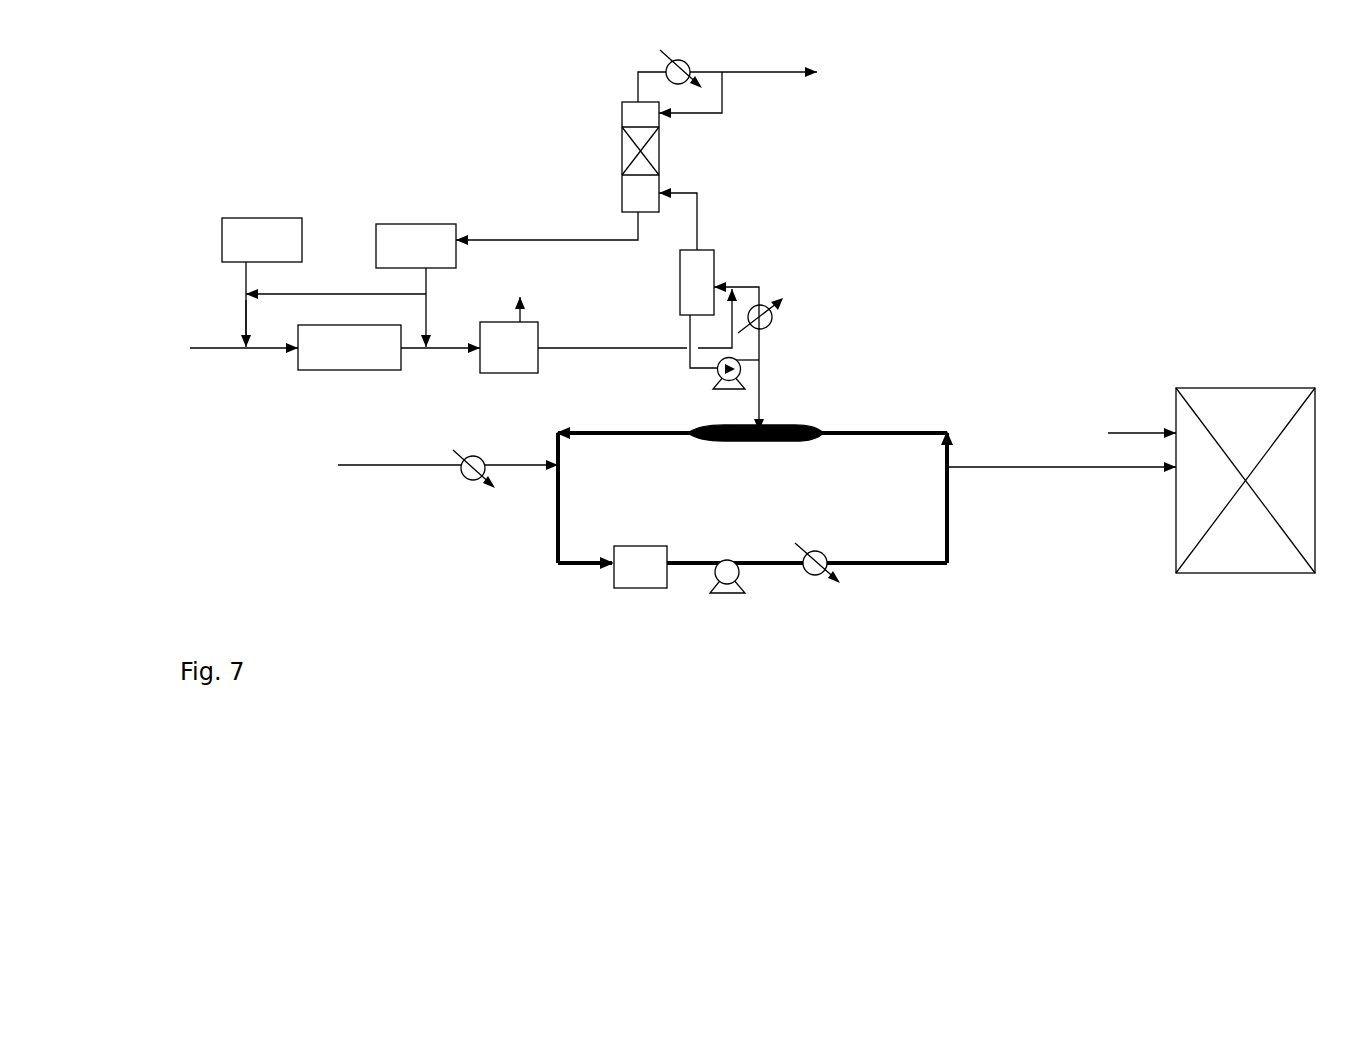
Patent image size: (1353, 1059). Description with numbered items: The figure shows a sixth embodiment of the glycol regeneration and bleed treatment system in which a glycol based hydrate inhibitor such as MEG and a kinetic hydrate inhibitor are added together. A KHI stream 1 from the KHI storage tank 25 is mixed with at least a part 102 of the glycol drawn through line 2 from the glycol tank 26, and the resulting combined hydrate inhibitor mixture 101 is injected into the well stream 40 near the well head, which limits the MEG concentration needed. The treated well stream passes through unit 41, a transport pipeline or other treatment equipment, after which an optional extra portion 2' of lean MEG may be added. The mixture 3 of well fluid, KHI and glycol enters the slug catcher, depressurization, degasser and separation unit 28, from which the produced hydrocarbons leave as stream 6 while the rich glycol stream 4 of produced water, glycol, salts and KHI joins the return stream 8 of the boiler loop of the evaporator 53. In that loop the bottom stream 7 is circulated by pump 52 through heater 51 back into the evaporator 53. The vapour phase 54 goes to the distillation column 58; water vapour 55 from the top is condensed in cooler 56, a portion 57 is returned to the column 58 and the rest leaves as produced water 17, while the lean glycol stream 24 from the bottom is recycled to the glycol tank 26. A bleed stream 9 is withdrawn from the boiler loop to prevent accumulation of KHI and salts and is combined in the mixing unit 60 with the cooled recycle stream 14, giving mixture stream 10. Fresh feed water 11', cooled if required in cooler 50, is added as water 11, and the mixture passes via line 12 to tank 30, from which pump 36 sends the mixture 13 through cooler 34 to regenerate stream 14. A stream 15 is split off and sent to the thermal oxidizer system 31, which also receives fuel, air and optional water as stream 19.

The KHI stream 1 is at (240, 304).
The glycol line 2 is at (434, 284).
The extra portion of lean MEG 2' is at (436, 323).
The mixture of well stream, KHI and glycol 3 is at (440, 365).
The rich glycol stream 4 is at (637, 335).
The produced hydrocarbons stream 6 is at (527, 303).
The bottom stream 7 is at (700, 362).
The return stream 8 is at (737, 311).
The bleed stream 9 is at (765, 395).
The mixture stream 10 is at (751, 422).
The water 11 is at (521, 480).
The fresh feed water 11' is at (399, 482).
The line 12 is at (567, 501).
The mixture 13 is at (807, 554).
The stream 14 is at (910, 484).
The stream 15 is at (1061, 482).
The produced water 17 is at (753, 59).
The stream 19 is at (1142, 421).
The lean glycol stream 24 is at (547, 228).
The KHI storage tank 25 is at (262, 240).
The glycol tank 26 is at (416, 246).
The slug catcher, depressurization, degasser, separation unit 28 is at (509, 347).
The tank 30 is at (640, 567).
The thermal oxidizer system 31 is at (1245, 480).
The cooler 34 is at (817, 589).
The pump 36 is at (726, 592).
The well stream 40 is at (226, 365).
The unit 41 is at (349, 347).
The cooler 50 is at (471, 484).
The heater 51 is at (770, 322).
The pump 52 is at (734, 390).
The evaporator 53 is at (679, 282).
The vapour phase 54 is at (695, 216).
The water vapour 55 is at (641, 76).
The cooler 56 is at (681, 60).
The condensed water portion 57 is at (705, 104).
The distillation column 58 is at (622, 157).
The mixing unit 60 is at (755, 449).
The combined hydrate inhibitor mixture 101 is at (221, 320).
The part of the glycol based inhibitor 102 is at (336, 283).